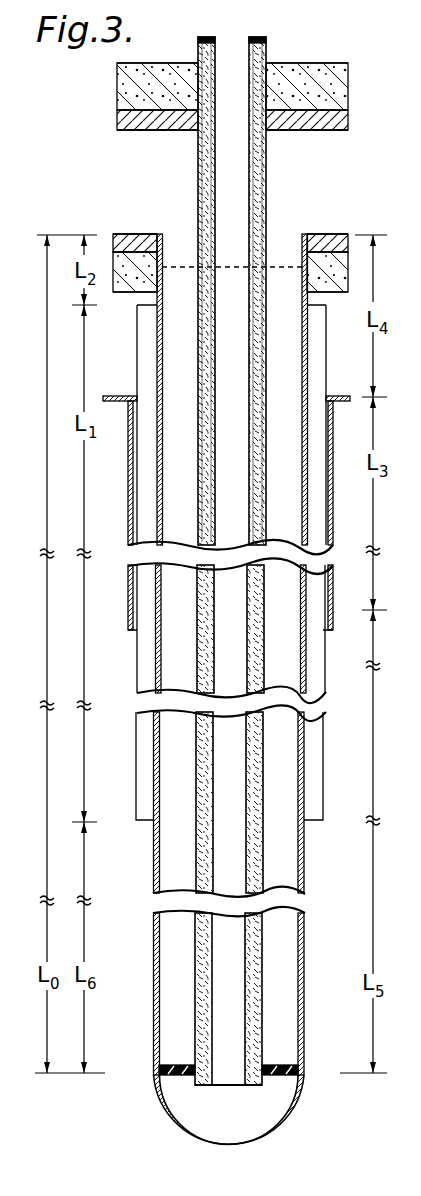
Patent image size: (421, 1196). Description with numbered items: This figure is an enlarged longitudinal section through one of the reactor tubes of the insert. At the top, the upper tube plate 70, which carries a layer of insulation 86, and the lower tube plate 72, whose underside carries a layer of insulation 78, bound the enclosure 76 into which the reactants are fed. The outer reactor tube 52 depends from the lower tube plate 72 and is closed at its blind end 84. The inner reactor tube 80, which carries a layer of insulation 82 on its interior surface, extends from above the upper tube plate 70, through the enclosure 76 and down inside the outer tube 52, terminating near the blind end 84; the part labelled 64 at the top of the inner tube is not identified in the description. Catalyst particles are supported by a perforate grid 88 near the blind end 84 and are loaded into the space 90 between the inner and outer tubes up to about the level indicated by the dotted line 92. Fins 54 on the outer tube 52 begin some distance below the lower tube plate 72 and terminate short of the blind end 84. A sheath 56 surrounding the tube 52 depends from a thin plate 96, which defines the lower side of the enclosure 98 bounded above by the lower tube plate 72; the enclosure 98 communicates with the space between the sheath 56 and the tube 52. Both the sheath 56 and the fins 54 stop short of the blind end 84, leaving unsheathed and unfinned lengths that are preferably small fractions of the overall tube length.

The outer reactor tube 52 is at (154, 862).
The fins 54 is at (137, 353).
The sheath 56 is at (233, 513).
The inner pipe 64 is at (225, 550).
The upper tube plate 70 is at (318, 128).
The lower tube plate 72 is at (318, 234).
The enclosure 76 is at (311, 194).
The layer of insulation 78 is at (330, 284).
The inner reactor tube 80 is at (198, 150).
The layer of insulation 82 is at (205, 185).
The blind end 84 is at (170, 1120).
The layer of insulation 86 is at (326, 78).
The perforate grid 88 is at (176, 1066).
The space between inner and outer tubes 90 is at (195, 384).
The dotted line 92 is at (286, 269).
The thin plate 96 is at (335, 401).
The enclosure 98 is at (363, 372).